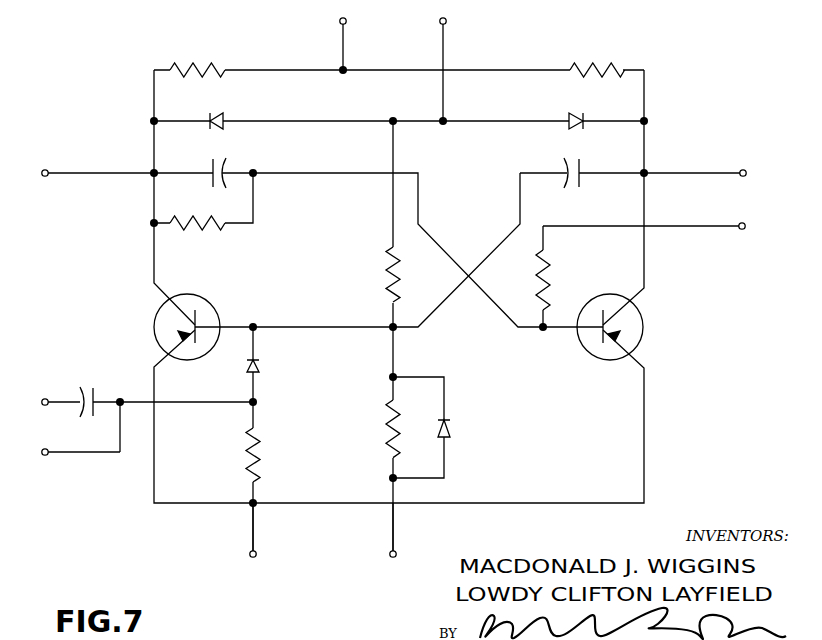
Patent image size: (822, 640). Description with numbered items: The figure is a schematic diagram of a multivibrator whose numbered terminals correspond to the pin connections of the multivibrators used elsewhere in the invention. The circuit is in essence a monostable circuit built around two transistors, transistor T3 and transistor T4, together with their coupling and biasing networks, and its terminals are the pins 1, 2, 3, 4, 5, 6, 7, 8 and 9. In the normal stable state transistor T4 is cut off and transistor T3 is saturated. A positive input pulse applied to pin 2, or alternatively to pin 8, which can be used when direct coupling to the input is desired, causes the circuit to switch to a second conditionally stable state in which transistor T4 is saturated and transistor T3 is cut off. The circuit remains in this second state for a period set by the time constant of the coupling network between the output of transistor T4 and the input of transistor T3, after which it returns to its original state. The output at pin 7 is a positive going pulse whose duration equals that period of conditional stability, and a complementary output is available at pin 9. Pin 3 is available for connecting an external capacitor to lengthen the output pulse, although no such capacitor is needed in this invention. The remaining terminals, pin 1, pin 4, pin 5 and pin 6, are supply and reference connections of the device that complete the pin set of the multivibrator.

The pin 1 is at (363, 35).
The pin 2 is at (73, 409).
The pin 3 is at (392, 545).
The pin 4 is at (651, 235).
The pin 5 is at (271, 545).
The pin 6 is at (457, 60).
The pin 7 is at (702, 184).
The pin 8 is at (73, 452).
The pin 9 is at (91, 173).
The transistor T3 is at (187, 314).
The transistor T4 is at (610, 314).